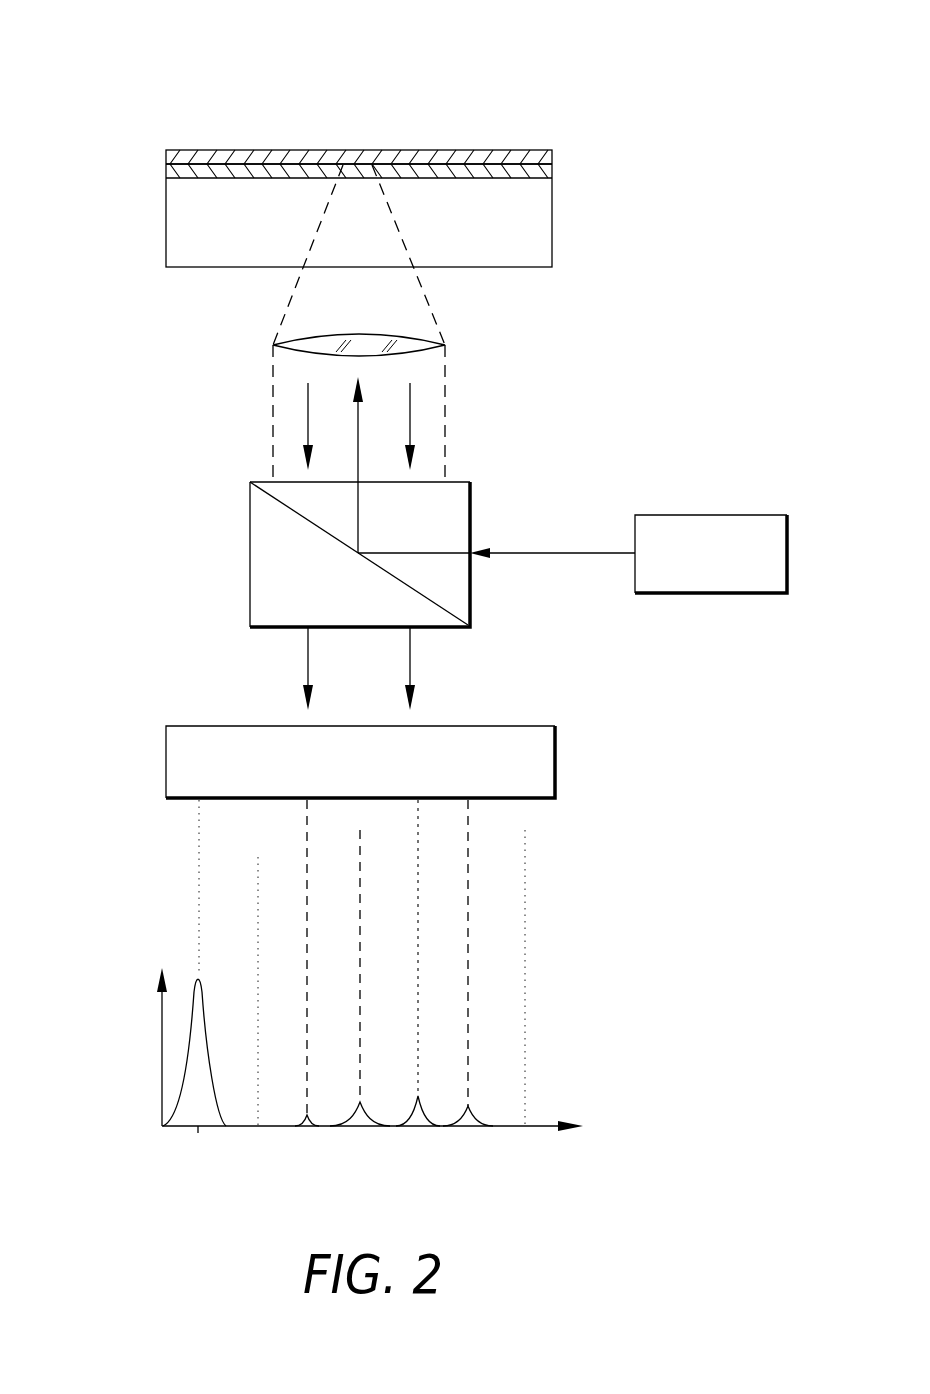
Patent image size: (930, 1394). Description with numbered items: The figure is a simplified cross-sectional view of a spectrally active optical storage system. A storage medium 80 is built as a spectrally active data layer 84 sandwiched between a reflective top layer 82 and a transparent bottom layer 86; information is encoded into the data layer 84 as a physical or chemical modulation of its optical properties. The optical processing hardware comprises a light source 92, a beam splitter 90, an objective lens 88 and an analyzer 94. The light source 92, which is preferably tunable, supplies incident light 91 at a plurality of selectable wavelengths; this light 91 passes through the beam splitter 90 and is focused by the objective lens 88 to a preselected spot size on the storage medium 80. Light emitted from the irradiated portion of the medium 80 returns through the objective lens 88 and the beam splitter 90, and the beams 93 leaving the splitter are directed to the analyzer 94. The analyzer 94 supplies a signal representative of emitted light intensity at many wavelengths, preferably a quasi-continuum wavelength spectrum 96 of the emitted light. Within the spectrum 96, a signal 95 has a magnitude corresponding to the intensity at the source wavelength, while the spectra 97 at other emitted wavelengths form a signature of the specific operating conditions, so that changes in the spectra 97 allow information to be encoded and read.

The storage medium 80 is at (392, 63).
The reflective top layer 82 is at (470, 150).
The spectrally active data layer 84 is at (168, 170).
The transparent bottom layer 86 is at (166, 232).
The objective lens 88 is at (420, 338).
The beam splitter 90 is at (458, 482).
The incident light 91 is at (530, 552).
The light source 92 is at (735, 513).
The reflected light beams 93 is at (307, 661).
The analyzer 94 is at (440, 726).
The signal at source wavelength 95 is at (177, 977).
The wavelength spectrum of emitted light 96 is at (477, 898).
The spectra of emitted radiation 97 is at (488, 1100).